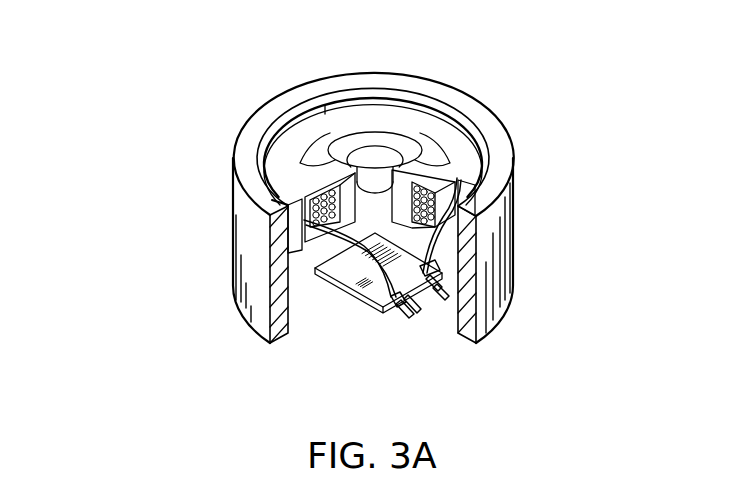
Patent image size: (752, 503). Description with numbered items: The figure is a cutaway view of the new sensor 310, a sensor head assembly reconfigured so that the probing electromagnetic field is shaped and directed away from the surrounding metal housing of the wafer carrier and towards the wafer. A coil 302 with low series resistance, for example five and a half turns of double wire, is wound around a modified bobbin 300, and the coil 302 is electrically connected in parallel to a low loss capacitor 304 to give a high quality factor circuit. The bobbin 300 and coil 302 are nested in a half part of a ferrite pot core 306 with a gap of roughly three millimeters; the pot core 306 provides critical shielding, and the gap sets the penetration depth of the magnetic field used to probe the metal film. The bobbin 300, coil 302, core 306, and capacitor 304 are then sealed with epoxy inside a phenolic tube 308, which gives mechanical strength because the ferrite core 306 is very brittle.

The bobbin 300 is at (375, 120).
The coil 302 is at (343, 188).
The capacitor 304 is at (375, 293).
The ferrite pot core 306 is at (336, 140).
The phenolic tube 308 is at (462, 338).
The sensor 310 is at (173, 202).